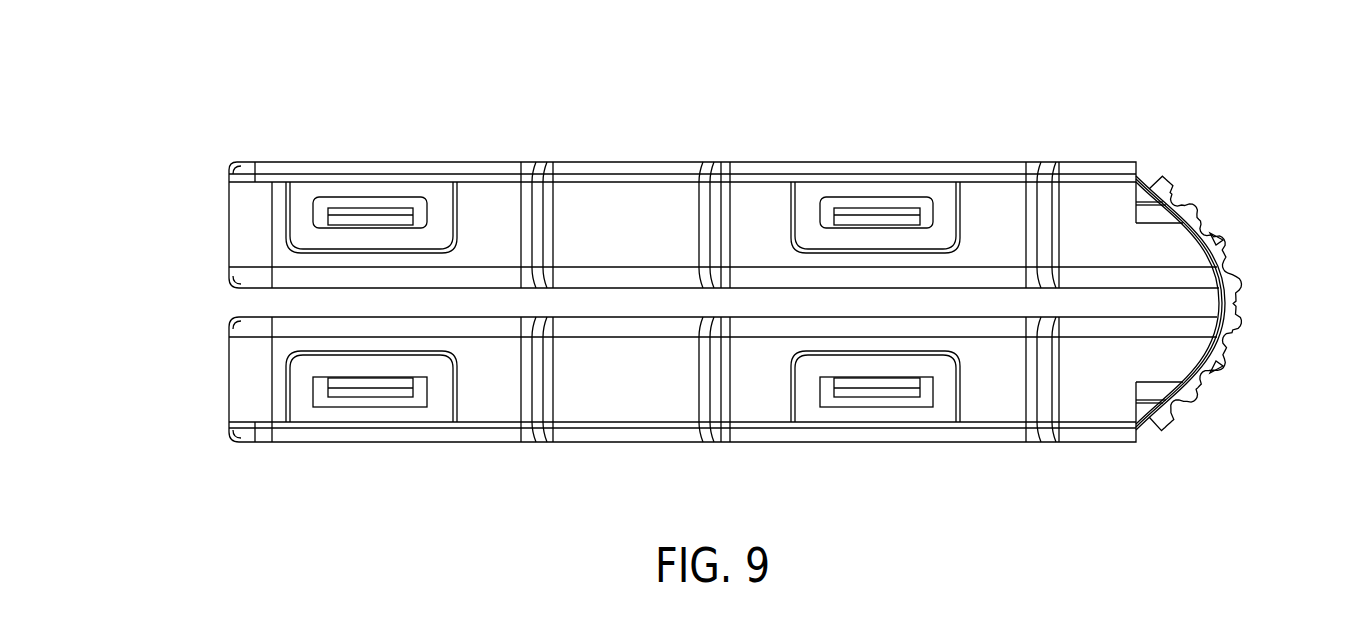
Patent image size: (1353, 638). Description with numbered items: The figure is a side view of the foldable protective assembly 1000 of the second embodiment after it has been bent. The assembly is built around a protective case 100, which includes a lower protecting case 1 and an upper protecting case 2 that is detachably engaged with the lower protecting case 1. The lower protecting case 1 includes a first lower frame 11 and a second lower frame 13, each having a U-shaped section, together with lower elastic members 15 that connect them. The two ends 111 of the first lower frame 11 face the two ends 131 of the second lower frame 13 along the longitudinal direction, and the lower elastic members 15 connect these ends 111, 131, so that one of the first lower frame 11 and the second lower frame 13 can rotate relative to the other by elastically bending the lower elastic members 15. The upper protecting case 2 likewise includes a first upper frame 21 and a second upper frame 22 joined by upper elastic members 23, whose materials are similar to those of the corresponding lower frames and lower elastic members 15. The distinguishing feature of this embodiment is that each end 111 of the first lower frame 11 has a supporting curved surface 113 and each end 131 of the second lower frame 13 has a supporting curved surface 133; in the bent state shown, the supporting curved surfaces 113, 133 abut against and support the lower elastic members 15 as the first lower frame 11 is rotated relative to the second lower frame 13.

The foldable protective assembly 1000 is at (1300, 62).
The protective case 100 is at (160, 140).
The lower protecting case 1 is at (228, 208).
The upper protecting case 2 is at (228, 162).
The first lower frame 11 is at (621, 192).
The second lower frame 13 is at (621, 415).
The lower elastic member 15 is at (1153, 198).
The first upper frame 21 is at (770, 165).
The second upper frame 22 is at (770, 442).
The upper elastic member 23 is at (1205, 208).
The end of the first lower frame 111 is at (1101, 205).
The end of the second lower frame 131 is at (1101, 398).
The supporting curved surface 113 is at (1225, 240).
The supporting curved surface 133 is at (1225, 366).